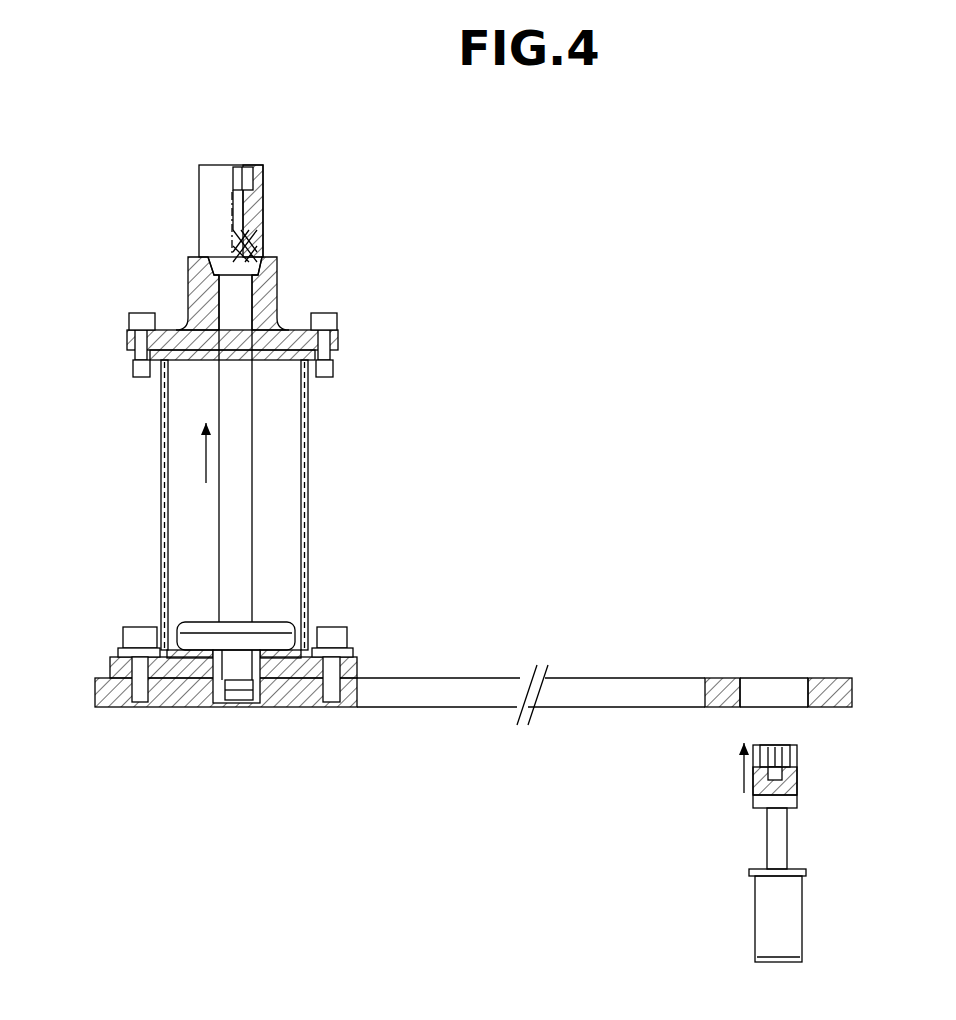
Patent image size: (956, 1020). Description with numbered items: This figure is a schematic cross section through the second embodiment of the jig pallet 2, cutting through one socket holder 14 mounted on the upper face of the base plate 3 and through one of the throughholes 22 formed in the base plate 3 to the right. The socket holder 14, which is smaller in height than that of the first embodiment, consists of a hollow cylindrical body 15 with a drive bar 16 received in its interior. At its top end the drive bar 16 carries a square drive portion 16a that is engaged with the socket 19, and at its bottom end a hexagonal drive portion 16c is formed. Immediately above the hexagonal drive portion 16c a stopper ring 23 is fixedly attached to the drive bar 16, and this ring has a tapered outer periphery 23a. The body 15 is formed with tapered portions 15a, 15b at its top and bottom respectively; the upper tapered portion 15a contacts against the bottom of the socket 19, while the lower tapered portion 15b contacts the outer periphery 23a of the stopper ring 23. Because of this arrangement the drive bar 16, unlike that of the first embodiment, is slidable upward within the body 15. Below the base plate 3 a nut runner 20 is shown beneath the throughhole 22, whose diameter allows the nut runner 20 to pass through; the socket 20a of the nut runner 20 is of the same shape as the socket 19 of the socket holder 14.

The jig pallet 2 is at (415, 737).
The base plate 3 is at (595, 688).
The socket holder 14 is at (122, 440).
The hollow cylindrical body 15 is at (307, 413).
The tapered portion 15a is at (263, 262).
The tapered portion 15b is at (305, 625).
The drive bar 16 is at (240, 480).
The square drive portion 16a is at (257, 243).
The hexagonal drive portion 16c is at (238, 703).
The socket 19 is at (208, 208).
The nut runner 20 is at (797, 783).
The socket of the nut runner 20a is at (777, 747).
The throughhole 22 is at (805, 690).
The stopper ring 23 is at (185, 707).
The tapered outer periphery 23a is at (160, 640).